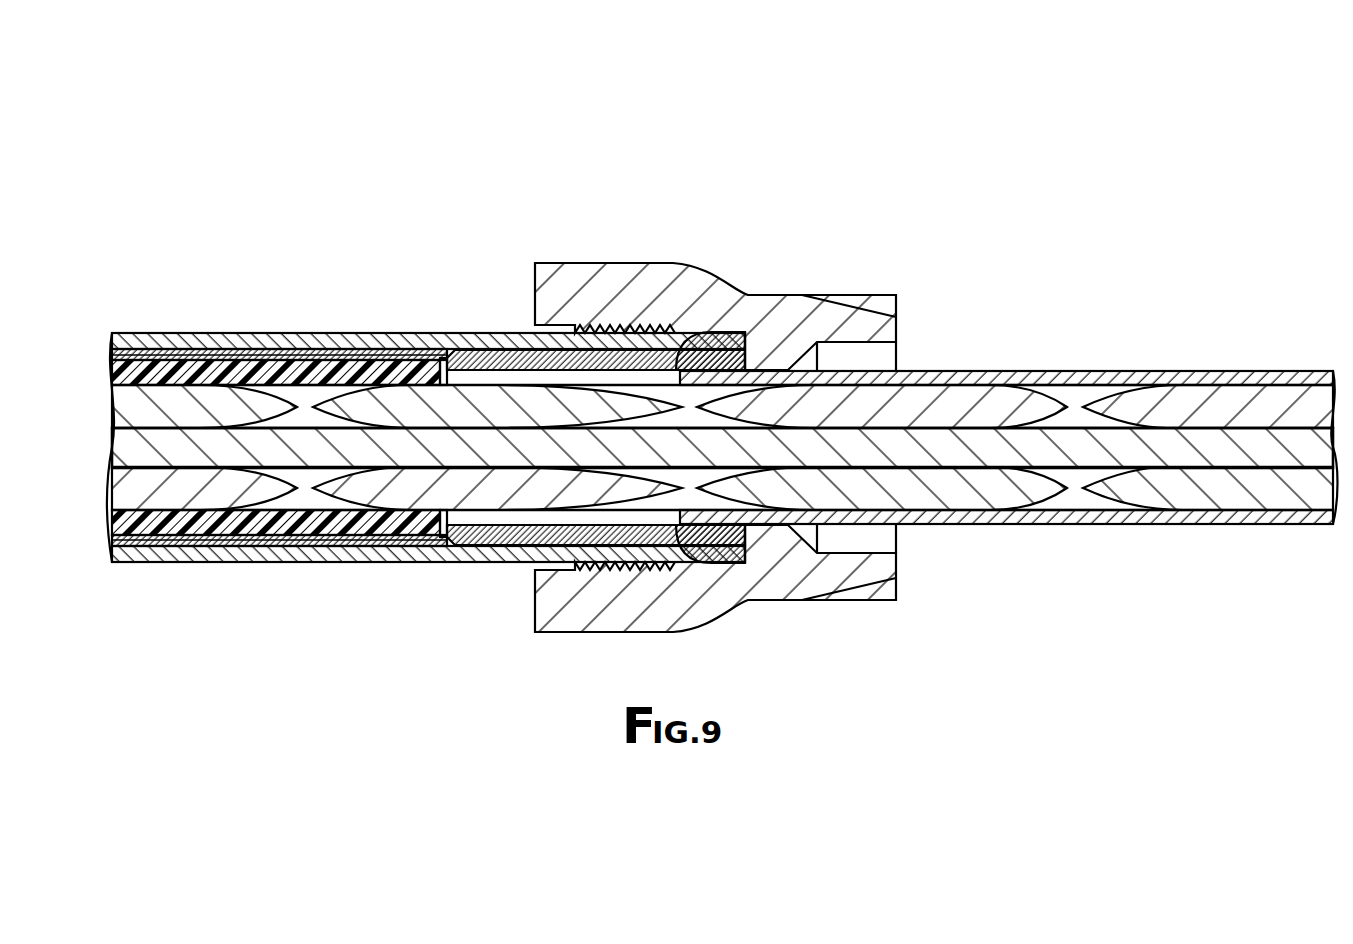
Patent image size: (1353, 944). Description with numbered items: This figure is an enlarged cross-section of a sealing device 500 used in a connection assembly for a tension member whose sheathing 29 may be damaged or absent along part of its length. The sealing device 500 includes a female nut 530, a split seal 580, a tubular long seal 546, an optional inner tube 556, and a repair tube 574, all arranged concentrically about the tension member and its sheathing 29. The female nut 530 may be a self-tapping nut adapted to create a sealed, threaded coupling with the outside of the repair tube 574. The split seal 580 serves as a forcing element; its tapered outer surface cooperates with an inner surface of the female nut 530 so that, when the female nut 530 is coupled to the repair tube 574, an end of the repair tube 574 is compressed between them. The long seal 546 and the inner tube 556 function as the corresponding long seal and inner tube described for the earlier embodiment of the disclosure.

The sealing device 500 is at (468, 120).
The sheathing 29 is at (1020, 371).
The repair tube 574 is at (247, 333).
The inner tube 556 is at (255, 550).
The tubular long seal 546 is at (370, 370).
The split seal 580 is at (487, 350).
The female nut 530 is at (616, 263).